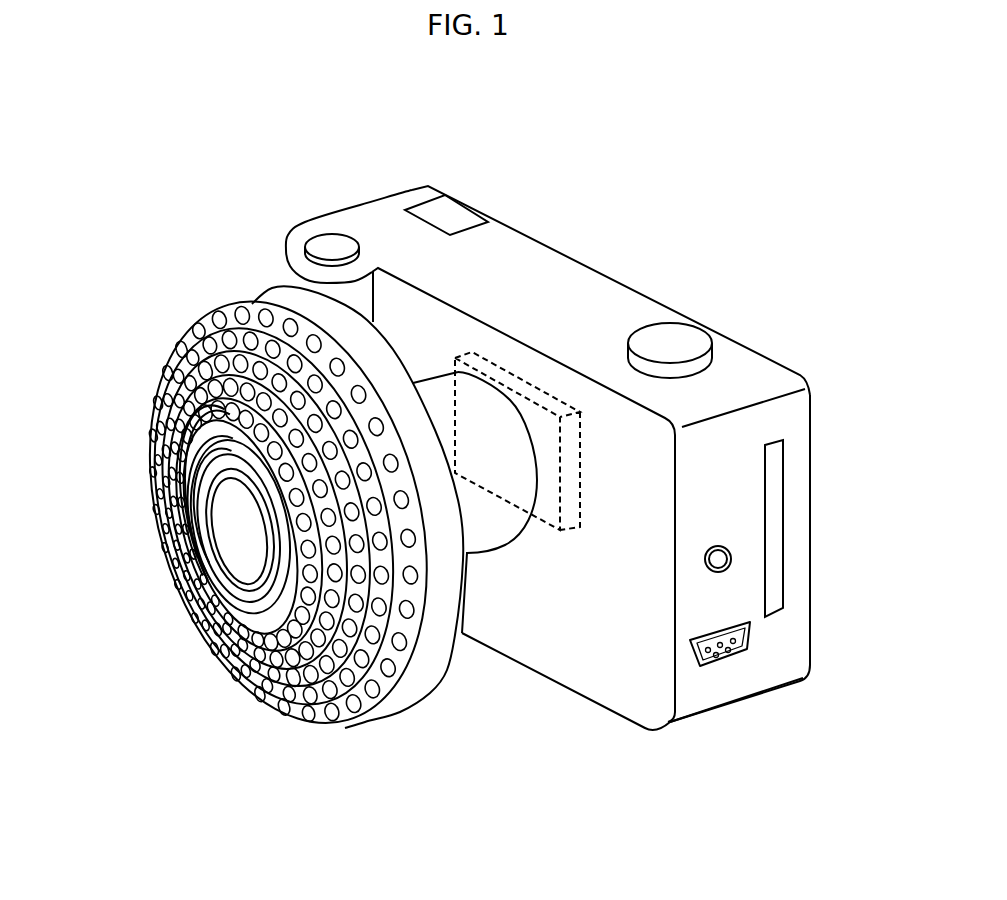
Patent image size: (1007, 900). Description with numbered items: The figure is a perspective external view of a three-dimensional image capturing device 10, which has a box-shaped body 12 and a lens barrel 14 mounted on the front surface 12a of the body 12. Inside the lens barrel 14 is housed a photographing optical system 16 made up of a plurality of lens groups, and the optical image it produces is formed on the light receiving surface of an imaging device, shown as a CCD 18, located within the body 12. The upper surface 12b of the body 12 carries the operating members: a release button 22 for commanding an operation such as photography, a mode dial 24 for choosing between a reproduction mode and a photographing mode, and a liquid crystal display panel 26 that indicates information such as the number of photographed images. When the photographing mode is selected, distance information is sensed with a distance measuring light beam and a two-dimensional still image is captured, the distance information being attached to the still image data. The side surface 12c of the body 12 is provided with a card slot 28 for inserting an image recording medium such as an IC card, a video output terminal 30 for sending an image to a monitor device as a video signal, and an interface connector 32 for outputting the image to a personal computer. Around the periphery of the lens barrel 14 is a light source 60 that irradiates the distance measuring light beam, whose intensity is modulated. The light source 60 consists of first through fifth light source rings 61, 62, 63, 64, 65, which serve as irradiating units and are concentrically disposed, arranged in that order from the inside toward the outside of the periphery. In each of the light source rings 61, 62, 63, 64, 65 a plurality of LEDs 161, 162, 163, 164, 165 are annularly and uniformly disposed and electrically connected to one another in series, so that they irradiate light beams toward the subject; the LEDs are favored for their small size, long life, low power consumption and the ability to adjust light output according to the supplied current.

The three-dimensional image capturing device 10 is at (467, 478).
The body 12 is at (548, 438).
The front surface 12a is at (600, 686).
The upper surface 12b is at (607, 293).
The side surface 12c is at (727, 690).
The lens barrel 14 is at (487, 525).
The photographing optical system 16 is at (230, 540).
The CCD 18 is at (527, 382).
The release button 22 is at (329, 243).
The mode dial 24 is at (690, 336).
The liquid crystal display panel 26 is at (450, 212).
The card slot 28 is at (775, 470).
The video output terminal 30 is at (727, 560).
The interface connector 32 is at (750, 648).
The light source 60 is at (377, 738).
The first light source ring 61 is at (258, 697).
The second light source ring 62 is at (283, 713).
The third light source ring 63 is at (318, 718).
The fourth light source ring 64 is at (345, 727).
The fifth light source ring 65 is at (395, 692).
The LEDs 161 is at (200, 440).
The LEDs 162 is at (185, 408).
The LEDs 163 is at (185, 374).
The LEDs 164 is at (200, 335).
The LEDs 165 is at (277, 320).